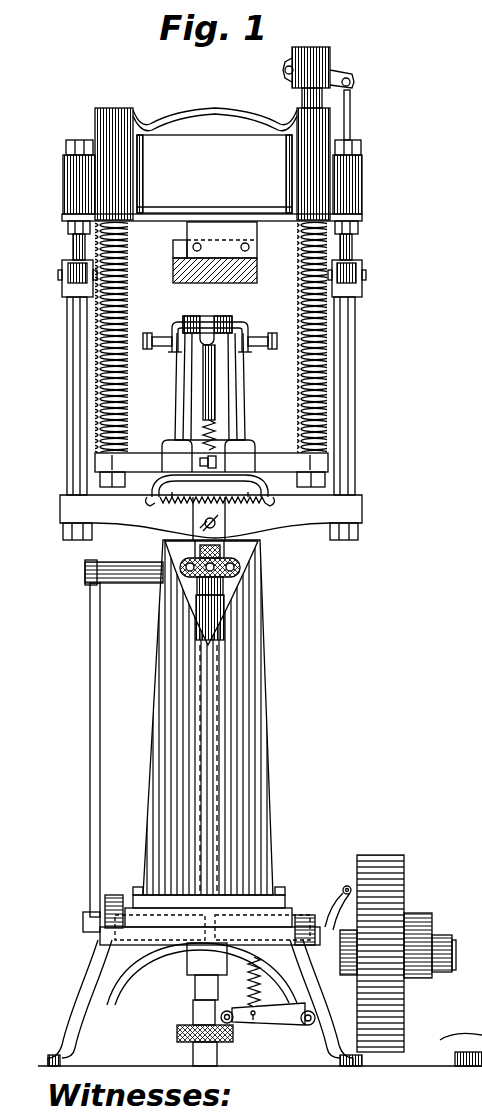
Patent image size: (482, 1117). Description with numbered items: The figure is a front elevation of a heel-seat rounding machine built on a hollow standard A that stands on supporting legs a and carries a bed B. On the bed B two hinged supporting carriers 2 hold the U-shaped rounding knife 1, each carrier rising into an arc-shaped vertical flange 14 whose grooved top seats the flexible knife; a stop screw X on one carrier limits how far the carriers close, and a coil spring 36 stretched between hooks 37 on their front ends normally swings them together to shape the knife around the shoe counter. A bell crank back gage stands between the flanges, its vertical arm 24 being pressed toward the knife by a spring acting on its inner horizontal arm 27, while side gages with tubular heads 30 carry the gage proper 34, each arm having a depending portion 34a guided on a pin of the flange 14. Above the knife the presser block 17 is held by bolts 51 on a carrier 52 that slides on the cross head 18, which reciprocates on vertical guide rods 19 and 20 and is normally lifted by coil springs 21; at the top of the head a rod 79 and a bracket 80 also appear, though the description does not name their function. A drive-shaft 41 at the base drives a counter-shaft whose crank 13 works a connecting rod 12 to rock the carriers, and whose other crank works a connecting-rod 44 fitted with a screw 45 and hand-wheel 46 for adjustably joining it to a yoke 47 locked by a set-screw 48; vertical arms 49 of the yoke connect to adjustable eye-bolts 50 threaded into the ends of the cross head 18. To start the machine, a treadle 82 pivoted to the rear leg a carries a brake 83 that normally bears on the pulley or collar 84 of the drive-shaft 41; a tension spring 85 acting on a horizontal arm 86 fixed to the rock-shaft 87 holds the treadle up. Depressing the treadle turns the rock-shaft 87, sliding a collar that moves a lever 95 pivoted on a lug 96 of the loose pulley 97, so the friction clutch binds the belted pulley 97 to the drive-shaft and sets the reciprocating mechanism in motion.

The rounding knife 1 is at (232, 322).
The supporting carriers 2 is at (170, 449).
The connecting rod 12 is at (100, 650).
The crank 13 is at (105, 937).
The vertical flange 14 is at (180, 381).
The presser block 17 is at (250, 278).
The cross head 18 is at (212, 164).
The vertical guide rod 19 is at (122, 290).
The vertical guide rod 20 is at (302, 97).
The coil springs 21 is at (292, 285).
The vertical arm 24 is at (205, 400).
The inner horizontal arm 27 is at (215, 423).
The tubular head 30 is at (165, 345).
The gage 34 is at (186, 322).
The depending portion 34a is at (252, 348).
The coil spring 36 is at (240, 505).
The hook 37 is at (151, 505).
The drive-shaft 41 is at (453, 940).
The connecting-rod 44 is at (215, 612).
The screw 45 is at (222, 553).
The hand-wheel 46 is at (240, 569).
The yoke 47 is at (226, 548).
The set-screw 48 is at (205, 526).
The vertical arms 49 is at (70, 362).
The adjustable eye-bolts 50 is at (79, 250).
The bolts 51 is at (193, 246).
The carrier 52 is at (245, 240).
The rod 79 is at (352, 105).
The bracket 80 is at (330, 58).
The treadle 82 is at (177, 1030).
The brake 83 is at (195, 986).
The pulley or collar 84 is at (195, 962).
The tension spring 85 is at (271, 982).
The horizontal arm 86 is at (270, 1022).
The rock-shaft 87 is at (305, 1025).
The lever 95 is at (338, 906).
The lug 96 is at (347, 885).
The loose pulley 97 is at (388, 858).
The hollow standard A is at (248, 697).
The bed B is at (211, 469).
The stop screw X is at (210, 487).
The supporting legs a is at (90, 980).